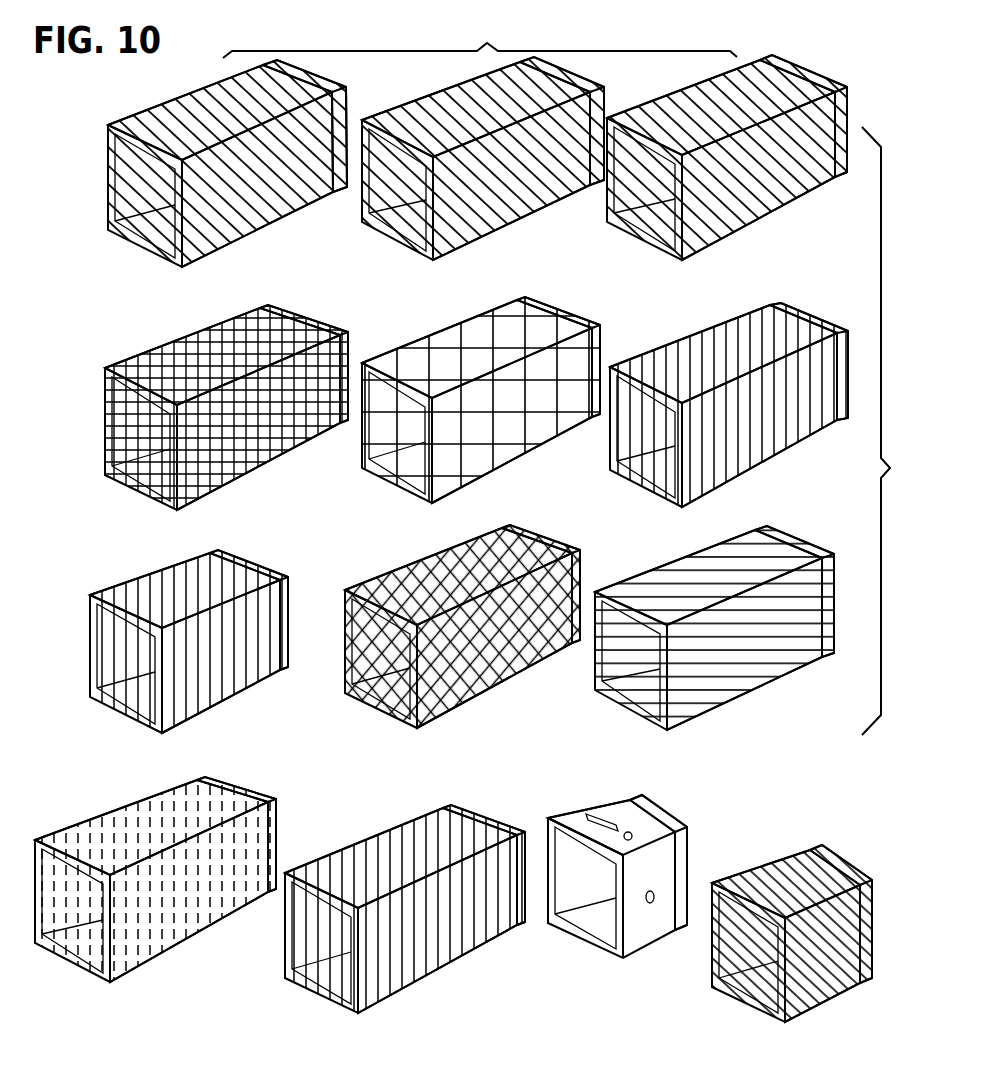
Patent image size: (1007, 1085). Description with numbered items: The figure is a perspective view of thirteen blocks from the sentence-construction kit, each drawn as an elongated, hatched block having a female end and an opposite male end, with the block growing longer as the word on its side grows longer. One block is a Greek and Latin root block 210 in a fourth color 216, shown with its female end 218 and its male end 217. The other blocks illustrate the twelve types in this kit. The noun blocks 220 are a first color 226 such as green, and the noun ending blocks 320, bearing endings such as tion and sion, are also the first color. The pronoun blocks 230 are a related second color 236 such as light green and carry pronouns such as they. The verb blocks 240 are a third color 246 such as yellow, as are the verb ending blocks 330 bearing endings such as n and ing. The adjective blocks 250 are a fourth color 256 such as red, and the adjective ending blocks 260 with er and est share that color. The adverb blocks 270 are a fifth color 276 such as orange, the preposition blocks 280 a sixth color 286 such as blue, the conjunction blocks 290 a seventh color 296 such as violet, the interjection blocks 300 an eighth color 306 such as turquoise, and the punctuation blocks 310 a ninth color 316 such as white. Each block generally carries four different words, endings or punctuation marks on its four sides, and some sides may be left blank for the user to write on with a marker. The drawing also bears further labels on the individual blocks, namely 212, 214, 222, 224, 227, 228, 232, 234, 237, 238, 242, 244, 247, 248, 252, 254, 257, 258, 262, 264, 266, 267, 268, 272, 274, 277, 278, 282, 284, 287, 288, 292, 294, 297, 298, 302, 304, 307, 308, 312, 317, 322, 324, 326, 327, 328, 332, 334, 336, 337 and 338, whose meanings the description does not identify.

The Greek and Latin root blocks 210 is at (478, 141).
The top face 212 is at (460, 90).
The side face 214 is at (510, 205).
The fourth color 216 is at (518, 80).
The male end 217 is at (576, 78).
The female end 218 is at (400, 218).
The noun blocks 220 is at (210, 149).
The top face 222 is at (208, 112).
The side face 224 is at (270, 205).
The first color 226 is at (262, 80).
The rear end cap 227 is at (322, 77).
The open front end 228 is at (145, 238).
The pronoun blocks 230 is at (716, 139).
The top face 232 is at (707, 88).
The side face 234 is at (765, 210).
The second color 236 is at (755, 72).
The rear end cap 237 is at (812, 78).
The open front end 238 is at (645, 225).
The verb blocks 240 is at (208, 393).
The top face 242 is at (200, 340).
The side face 244 is at (250, 458).
The third color 246 is at (248, 328).
The rear end cap 247 is at (305, 335).
The open front end 248 is at (140, 470).
The adjective blocks 250 is at (728, 389).
The top face 252 is at (710, 345).
The side face 254 is at (765, 452).
The fourth color 256 is at (740, 320).
The rear end cap 257 is at (818, 328).
The open front end 258 is at (655, 465).
The adjective ending blocks 260 is at (186, 624).
The top face 262 is at (183, 575).
The side face 264 is at (262, 668).
The rear end 266 is at (222, 560).
The rear end cap 267 is at (262, 570).
The open front end 268 is at (128, 690).
The adverb blocks 270 is at (449, 614).
The top face 272 is at (425, 565).
The side face 274 is at (510, 680).
The fifth color 276 is at (470, 548).
The rear end cap 277 is at (545, 548).
The open front end 278 is at (378, 690).
The preposition blocks 280 is at (714, 613).
The top face 282 is at (692, 565).
The side face 284 is at (745, 668).
The sixth color 286 is at (740, 540).
The rear end cap 287 is at (800, 545).
The open front end 288 is at (640, 700).
The conjunction blocks 290 is at (155, 875).
The top face 292 is at (120, 838).
The side face 294 is at (192, 930).
The seventh color 296 is at (185, 790).
The rear end cap 297 is at (245, 798).
The open front end 298 is at (62, 950).
The interjection blocks 300 is at (480, 900).
The top face 302 is at (388, 840).
The side face 304 is at (435, 970).
The eighth color 306 is at (425, 825).
The rear end cap 307 is at (485, 820).
The open front end 308 is at (332, 990).
The punctuation blocks 310 is at (623, 854).
The exclamation mark 312 is at (595, 812).
The ninth color 316 is at (612, 805).
The rear end cap 317 is at (655, 815).
The noun ending blocks 320 is at (791, 910).
The top face 322 is at (787, 860).
The side face 324 is at (825, 995).
The rear end 326 is at (800, 855).
The rear end cap 327 is at (835, 865).
The open front end 328 is at (752, 995).
The verb ending blocks 330 is at (468, 381).
The top face 332 is at (455, 345).
The side face 334 is at (518, 450).
The rear end 336 is at (500, 320).
The rear end cap 337 is at (565, 320).
The open front end 338 is at (395, 465).